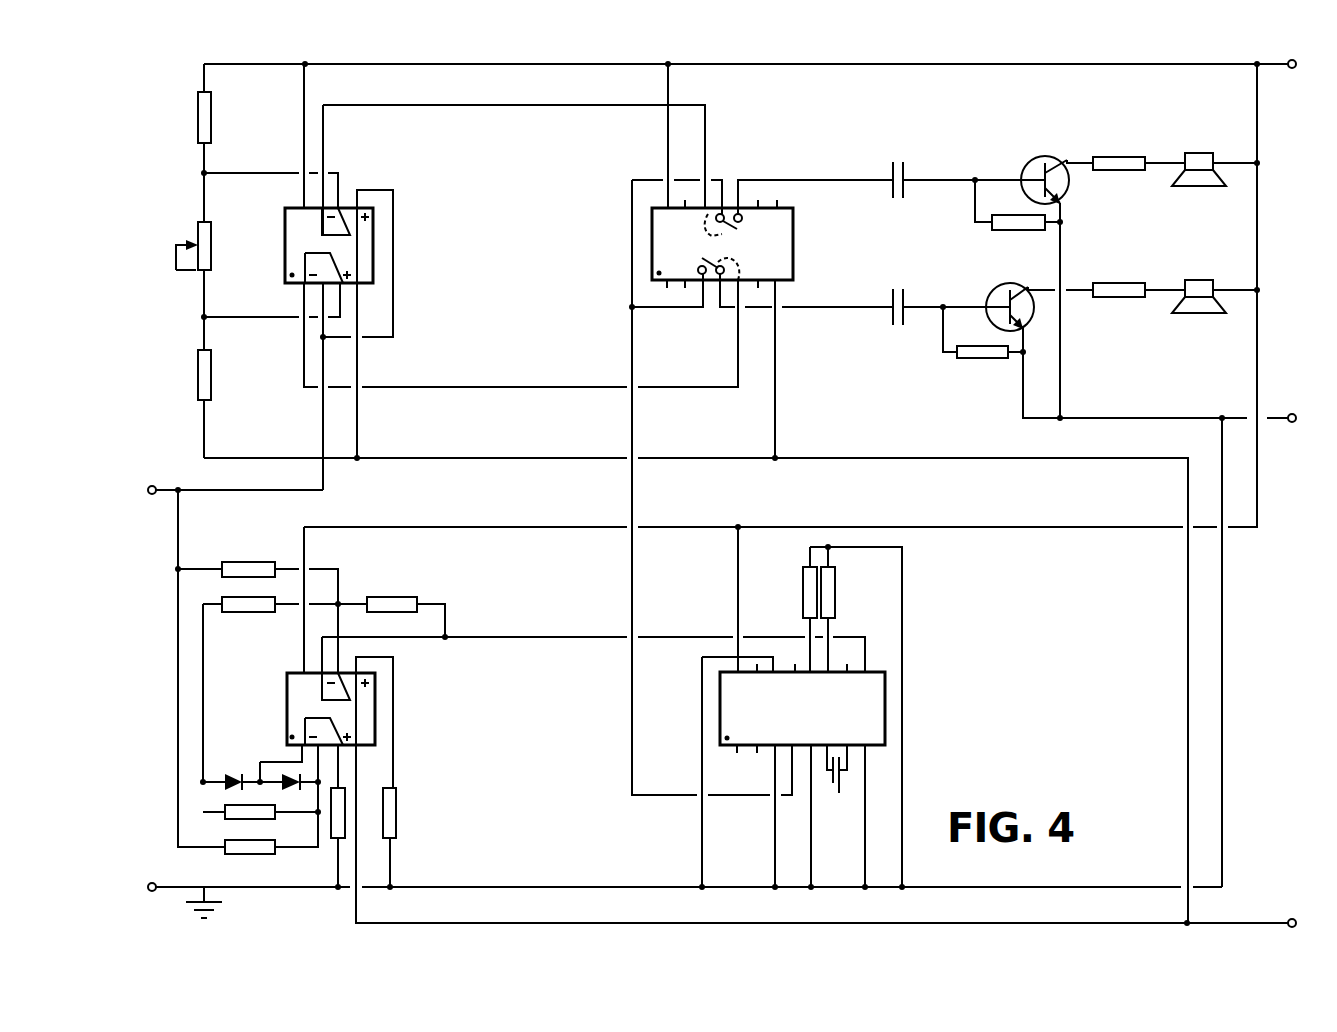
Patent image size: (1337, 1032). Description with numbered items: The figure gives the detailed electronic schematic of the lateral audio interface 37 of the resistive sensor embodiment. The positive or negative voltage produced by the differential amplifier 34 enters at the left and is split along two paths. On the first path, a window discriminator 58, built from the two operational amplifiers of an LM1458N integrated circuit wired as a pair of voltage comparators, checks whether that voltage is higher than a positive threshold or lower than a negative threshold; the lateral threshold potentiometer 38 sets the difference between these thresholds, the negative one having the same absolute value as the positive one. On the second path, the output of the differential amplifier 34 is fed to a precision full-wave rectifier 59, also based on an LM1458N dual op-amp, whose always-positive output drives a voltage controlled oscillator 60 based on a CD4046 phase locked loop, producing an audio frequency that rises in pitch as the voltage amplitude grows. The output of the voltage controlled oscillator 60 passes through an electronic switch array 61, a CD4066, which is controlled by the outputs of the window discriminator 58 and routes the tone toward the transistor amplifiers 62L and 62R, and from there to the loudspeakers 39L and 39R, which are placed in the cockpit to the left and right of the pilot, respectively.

The differential amplifier 34 is at (208, 497).
The lateral audio interface 37 is at (1143, 777).
The lateral threshold potentiometer 38 is at (185, 274).
The right loudspeaker 39R is at (1195, 190).
The left loudspeaker 39L is at (1195, 318).
The window discriminator 58 is at (402, 232).
The precision full-wave rectifier 59 is at (403, 741).
The voltage controlled oscillator 60 is at (913, 705).
The electronic switch array 61 is at (618, 247).
The right transistor amplifier 62R is at (1023, 165).
The left transistor amplifier 62L is at (993, 290).